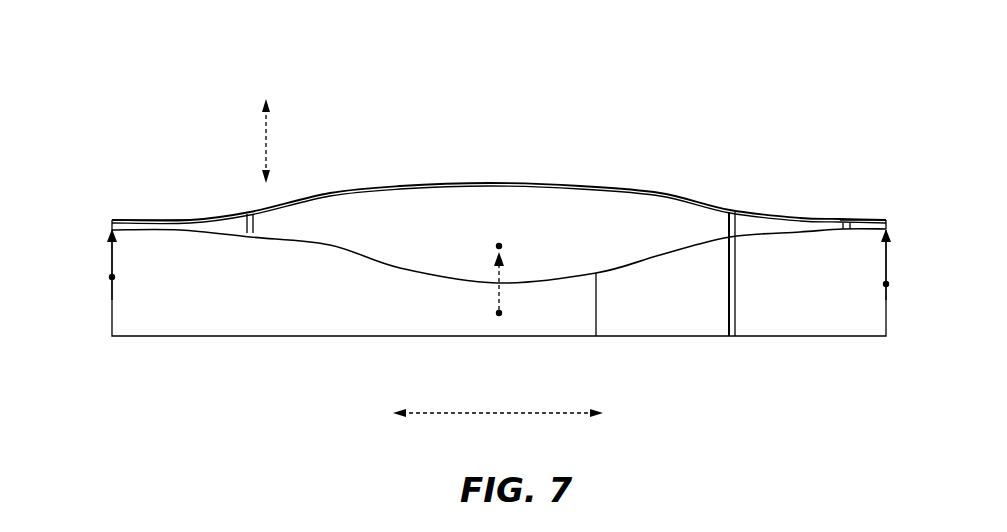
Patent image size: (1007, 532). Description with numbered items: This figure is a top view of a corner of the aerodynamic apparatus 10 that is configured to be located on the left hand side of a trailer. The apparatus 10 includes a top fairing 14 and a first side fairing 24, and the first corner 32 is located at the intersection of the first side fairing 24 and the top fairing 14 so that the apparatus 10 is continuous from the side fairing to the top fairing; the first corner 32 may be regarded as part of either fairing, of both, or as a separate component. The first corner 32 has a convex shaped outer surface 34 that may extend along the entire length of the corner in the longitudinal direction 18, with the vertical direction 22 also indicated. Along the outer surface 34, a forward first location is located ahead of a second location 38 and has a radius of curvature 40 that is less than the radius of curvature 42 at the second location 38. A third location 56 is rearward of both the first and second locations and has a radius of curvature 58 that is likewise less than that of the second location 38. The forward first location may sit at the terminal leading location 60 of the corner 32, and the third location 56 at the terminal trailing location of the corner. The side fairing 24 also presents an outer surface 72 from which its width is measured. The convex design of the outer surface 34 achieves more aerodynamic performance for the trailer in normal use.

The apparatus 10 is at (764, 60).
The top fairing 14 is at (551, 313).
The longitudinal direction 18 is at (490, 412).
The vertical direction 22 is at (270, 143).
The first side fairing 24 is at (207, 218).
The first corner 32 is at (388, 205).
The outer surface 34 is at (631, 212).
The second location 38 is at (502, 245).
The radius of curvature 40 is at (110, 278).
The radius of curvature 42 is at (497, 292).
The third location 56 is at (890, 231).
The radius of curvature 58 is at (888, 262).
The terminal leading location 60 is at (110, 230).
The outer surface 72 is at (222, 312).